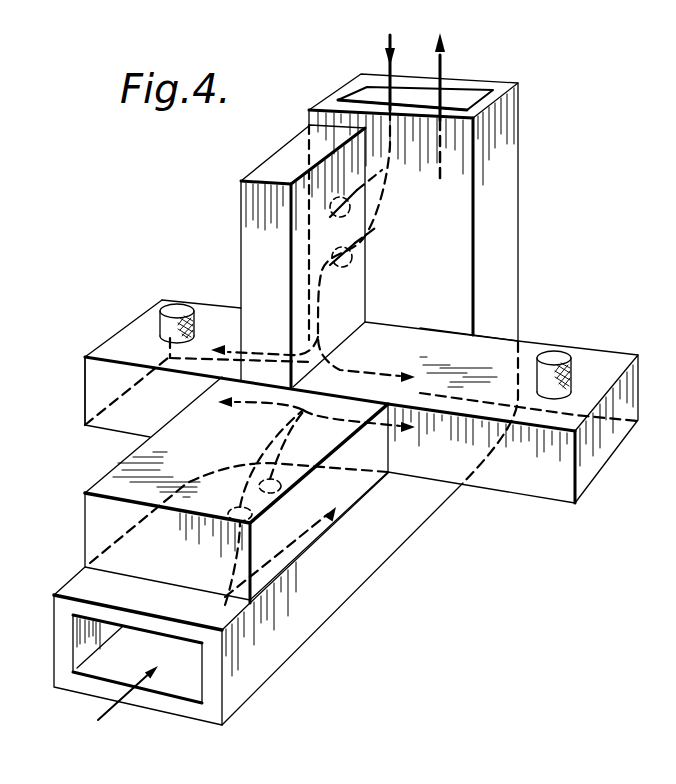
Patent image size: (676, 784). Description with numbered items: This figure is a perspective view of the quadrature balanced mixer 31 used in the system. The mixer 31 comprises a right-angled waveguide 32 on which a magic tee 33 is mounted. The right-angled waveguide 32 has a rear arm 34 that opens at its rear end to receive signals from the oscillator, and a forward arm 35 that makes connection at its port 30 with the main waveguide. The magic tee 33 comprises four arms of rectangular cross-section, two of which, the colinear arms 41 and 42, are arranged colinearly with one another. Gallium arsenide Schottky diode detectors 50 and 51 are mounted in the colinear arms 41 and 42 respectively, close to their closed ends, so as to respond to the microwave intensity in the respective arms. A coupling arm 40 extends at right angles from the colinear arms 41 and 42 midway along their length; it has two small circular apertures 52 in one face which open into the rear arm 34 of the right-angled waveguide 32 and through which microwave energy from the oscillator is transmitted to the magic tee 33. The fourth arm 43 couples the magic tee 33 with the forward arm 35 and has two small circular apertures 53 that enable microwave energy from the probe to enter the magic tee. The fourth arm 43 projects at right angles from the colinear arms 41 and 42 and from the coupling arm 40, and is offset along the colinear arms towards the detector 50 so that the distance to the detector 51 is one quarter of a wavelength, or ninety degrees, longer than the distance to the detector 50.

The port 30 is at (470, 97).
The quadrature balanced mixer 31 is at (130, 442).
The right-angled waveguide 32 is at (315, 642).
The magic tee 33 is at (537, 340).
The rear arm 34 is at (260, 670).
The forward arm 35 is at (507, 212).
The coupling arm 40 is at (98, 523).
The colinear arm 41 is at (92, 368).
The colinear arm 42 is at (552, 485).
The fourth arm 43 is at (250, 197).
The Schottky diode detector 50 is at (182, 303).
The Schottky diode detector 51 is at (568, 368).
The circular apertures 52 is at (270, 486).
The circular apertures 53 is at (337, 213).